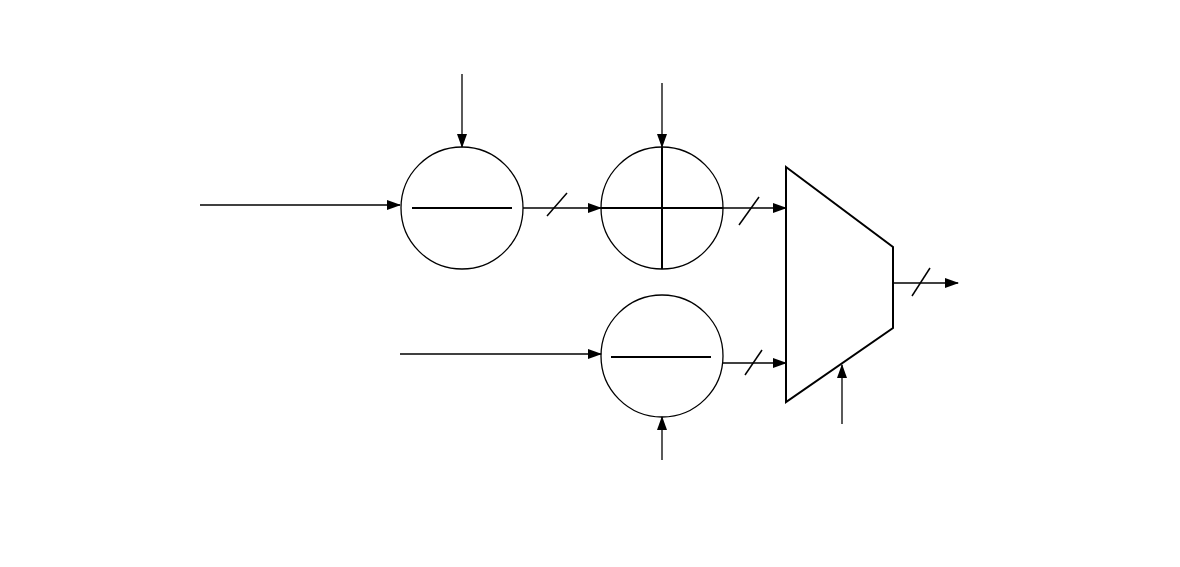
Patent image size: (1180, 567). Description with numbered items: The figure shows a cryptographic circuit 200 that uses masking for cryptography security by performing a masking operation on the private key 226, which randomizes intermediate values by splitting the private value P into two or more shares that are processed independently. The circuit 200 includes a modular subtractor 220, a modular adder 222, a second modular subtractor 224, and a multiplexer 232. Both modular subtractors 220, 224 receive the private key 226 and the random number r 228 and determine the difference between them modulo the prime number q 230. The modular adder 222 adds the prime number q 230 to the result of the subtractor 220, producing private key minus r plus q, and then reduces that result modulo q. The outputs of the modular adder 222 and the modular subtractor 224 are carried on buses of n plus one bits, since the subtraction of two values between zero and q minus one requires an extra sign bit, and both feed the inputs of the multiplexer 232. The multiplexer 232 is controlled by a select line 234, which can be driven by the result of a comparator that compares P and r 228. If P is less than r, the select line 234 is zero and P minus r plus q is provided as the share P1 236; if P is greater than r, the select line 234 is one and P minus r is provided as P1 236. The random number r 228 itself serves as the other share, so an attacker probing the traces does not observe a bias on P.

The cryptographic circuit 200 is at (1062, 62).
The modular subtractor 220 is at (427, 157).
The modular adder 222 is at (625, 160).
The modular subtractor 224 is at (627, 307).
The private key 226 is at (278, 207).
The random number r 228 is at (462, 88).
The prime number q 230 is at (662, 110).
The multiplexer 232 is at (787, 400).
The select line 234 is at (853, 427).
The P1 236 is at (972, 288).